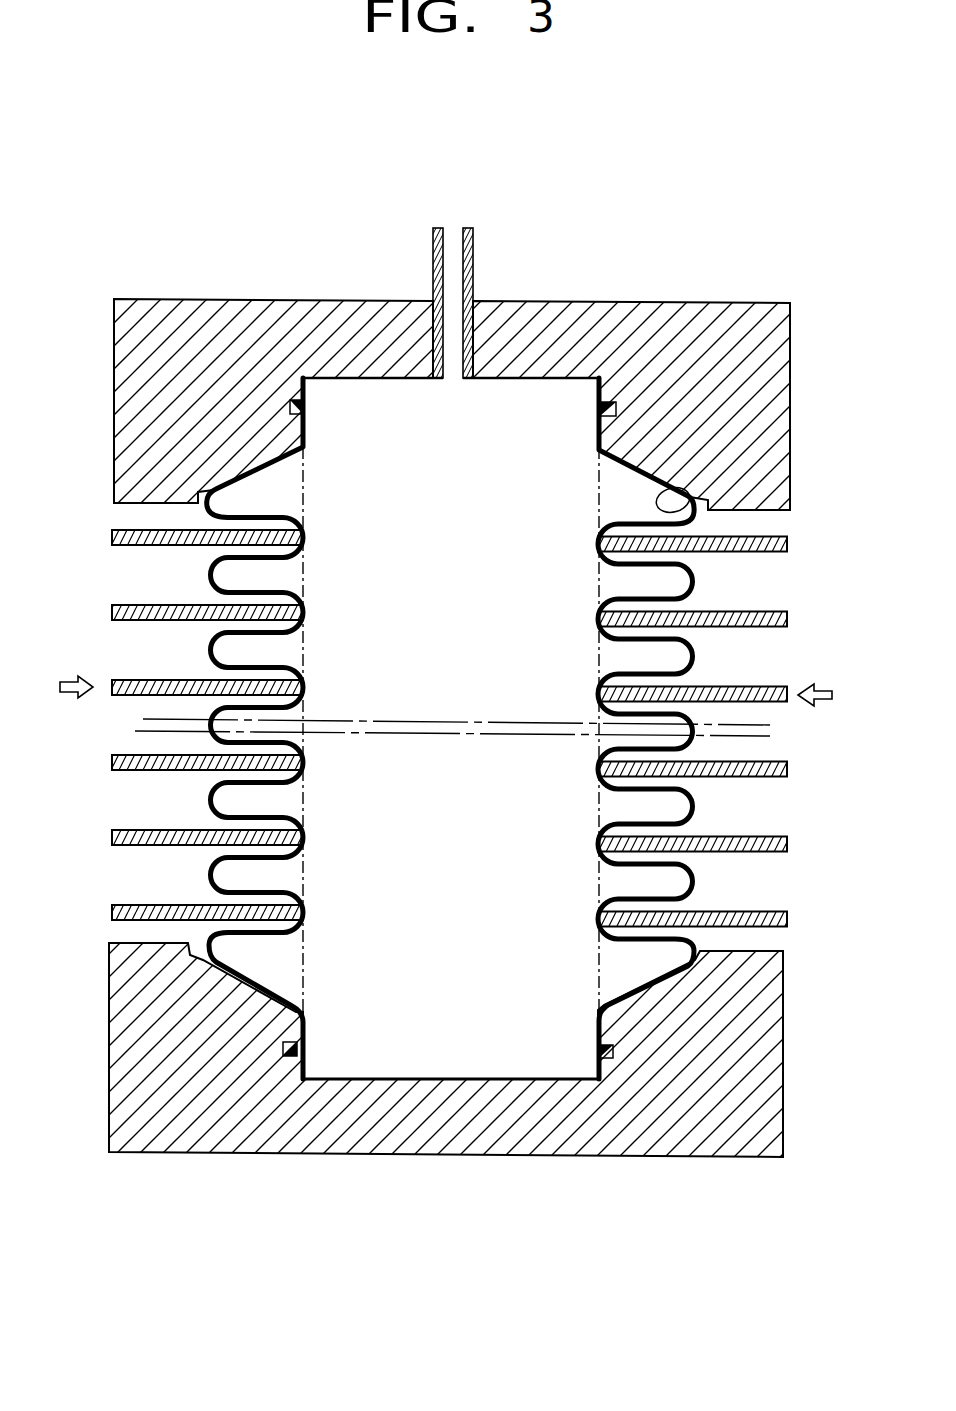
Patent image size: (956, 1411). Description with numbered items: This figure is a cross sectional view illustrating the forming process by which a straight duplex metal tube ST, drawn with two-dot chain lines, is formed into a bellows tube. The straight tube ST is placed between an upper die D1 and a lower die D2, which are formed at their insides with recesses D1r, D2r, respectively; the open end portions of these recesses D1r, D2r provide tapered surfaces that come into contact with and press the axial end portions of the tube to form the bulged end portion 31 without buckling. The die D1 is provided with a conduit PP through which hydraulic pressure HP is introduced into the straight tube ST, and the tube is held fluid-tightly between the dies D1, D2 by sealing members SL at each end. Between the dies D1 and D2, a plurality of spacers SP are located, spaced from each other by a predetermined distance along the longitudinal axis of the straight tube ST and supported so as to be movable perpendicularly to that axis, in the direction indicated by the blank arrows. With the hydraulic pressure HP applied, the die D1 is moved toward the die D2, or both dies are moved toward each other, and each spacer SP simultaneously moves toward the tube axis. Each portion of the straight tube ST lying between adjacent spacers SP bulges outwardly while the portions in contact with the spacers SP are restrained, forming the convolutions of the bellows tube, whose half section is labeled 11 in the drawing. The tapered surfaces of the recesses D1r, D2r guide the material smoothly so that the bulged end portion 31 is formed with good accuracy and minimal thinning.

The die D1 is at (147, 320).
The die D2 is at (405, 1127).
The recess D1r is at (535, 378).
The recess D2r is at (518, 1082).
The conduit PP is at (433, 250).
The hydraulic pressure HP is at (454, 258).
The straight duplex metal tube ST is at (597, 507).
The sealing member SL is at (296, 398).
The spacer SP is at (123, 548).
The bellows tube (first bellows) 11 is at (200, 508).
The bulged end portion 31 is at (692, 505).